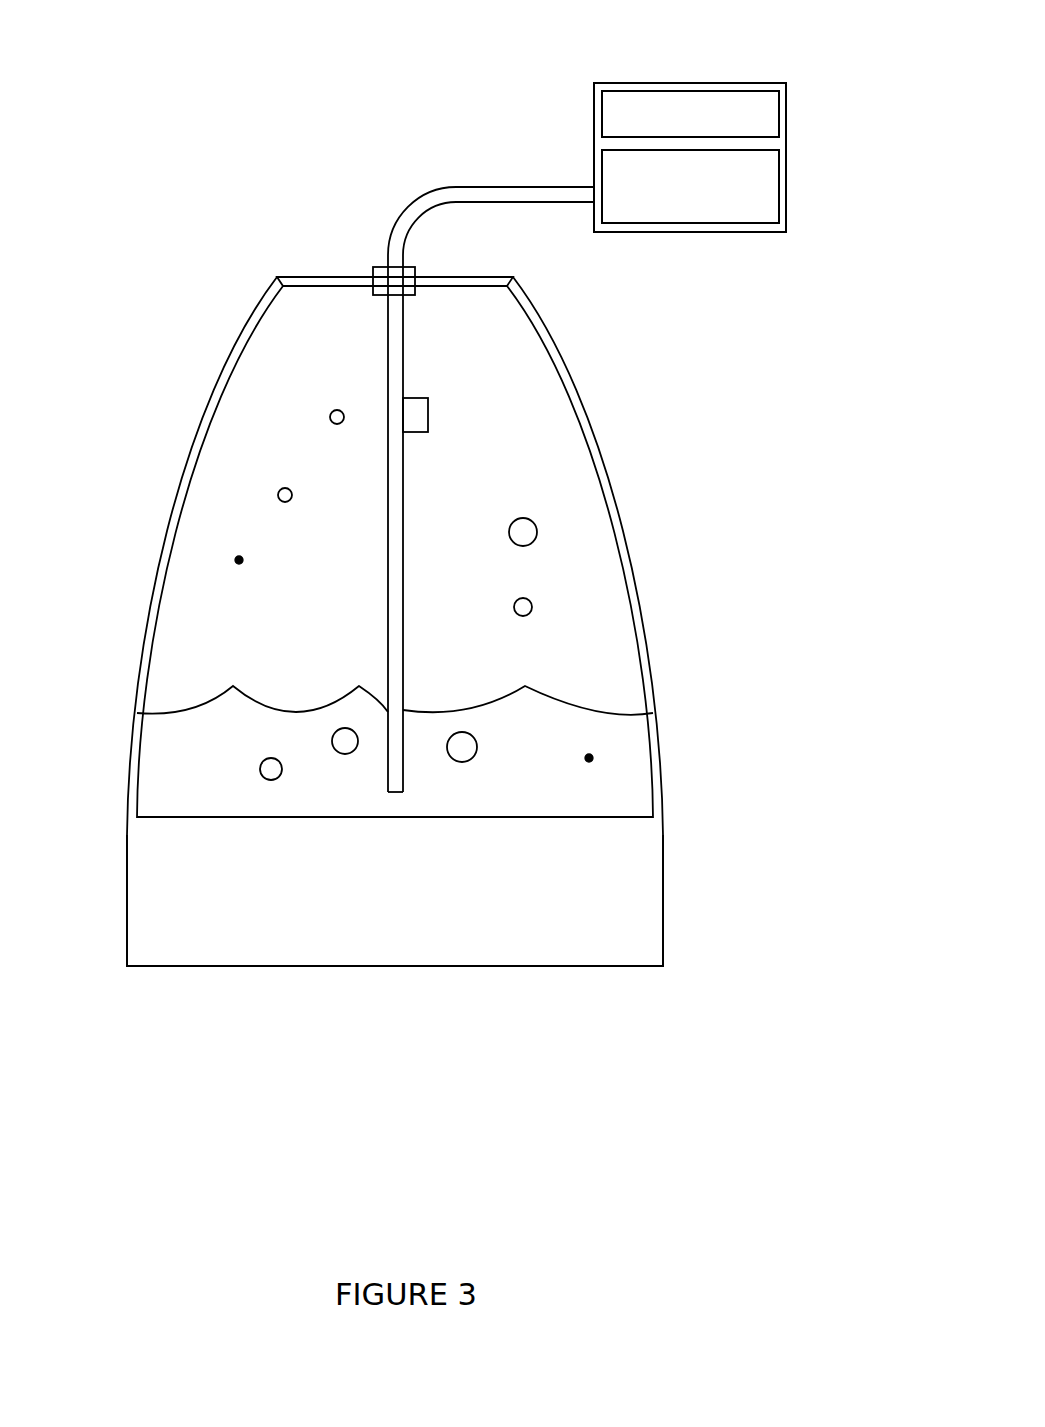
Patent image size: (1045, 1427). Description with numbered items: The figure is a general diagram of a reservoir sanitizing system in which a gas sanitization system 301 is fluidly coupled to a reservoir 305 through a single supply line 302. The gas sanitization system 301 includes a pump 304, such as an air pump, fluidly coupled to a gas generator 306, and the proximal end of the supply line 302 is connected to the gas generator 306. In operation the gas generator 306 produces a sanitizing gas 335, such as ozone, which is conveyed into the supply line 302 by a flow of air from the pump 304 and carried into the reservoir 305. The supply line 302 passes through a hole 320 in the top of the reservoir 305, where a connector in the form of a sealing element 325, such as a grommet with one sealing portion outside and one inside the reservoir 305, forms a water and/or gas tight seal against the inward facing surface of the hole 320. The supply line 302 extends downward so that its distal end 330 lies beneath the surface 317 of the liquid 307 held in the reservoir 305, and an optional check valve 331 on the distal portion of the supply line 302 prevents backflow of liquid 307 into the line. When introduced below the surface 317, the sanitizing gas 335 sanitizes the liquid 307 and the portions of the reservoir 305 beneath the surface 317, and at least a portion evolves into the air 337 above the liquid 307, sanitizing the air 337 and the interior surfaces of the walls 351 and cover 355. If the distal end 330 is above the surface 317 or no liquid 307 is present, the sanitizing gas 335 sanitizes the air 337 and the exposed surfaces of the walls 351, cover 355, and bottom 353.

The gas sanitization system 301 is at (667, 67).
The pump 304 is at (581, 79).
The gas generator 306 is at (579, 148).
The supply line 302 is at (434, 171).
The hole 320 is at (370, 251).
The sealing element 325 is at (439, 269).
The cover 355 is at (287, 260).
The reservoir 305 is at (644, 517).
The walls 351 is at (659, 625).
The bottom 353 is at (229, 839).
The check valve 331 is at (450, 399).
The surface 317 is at (199, 674).
The sanitizing gas 335 is at (307, 403).
The air 337 is at (239, 560).
The liquid 307 is at (589, 758).
The distal end 330 is at (418, 813).